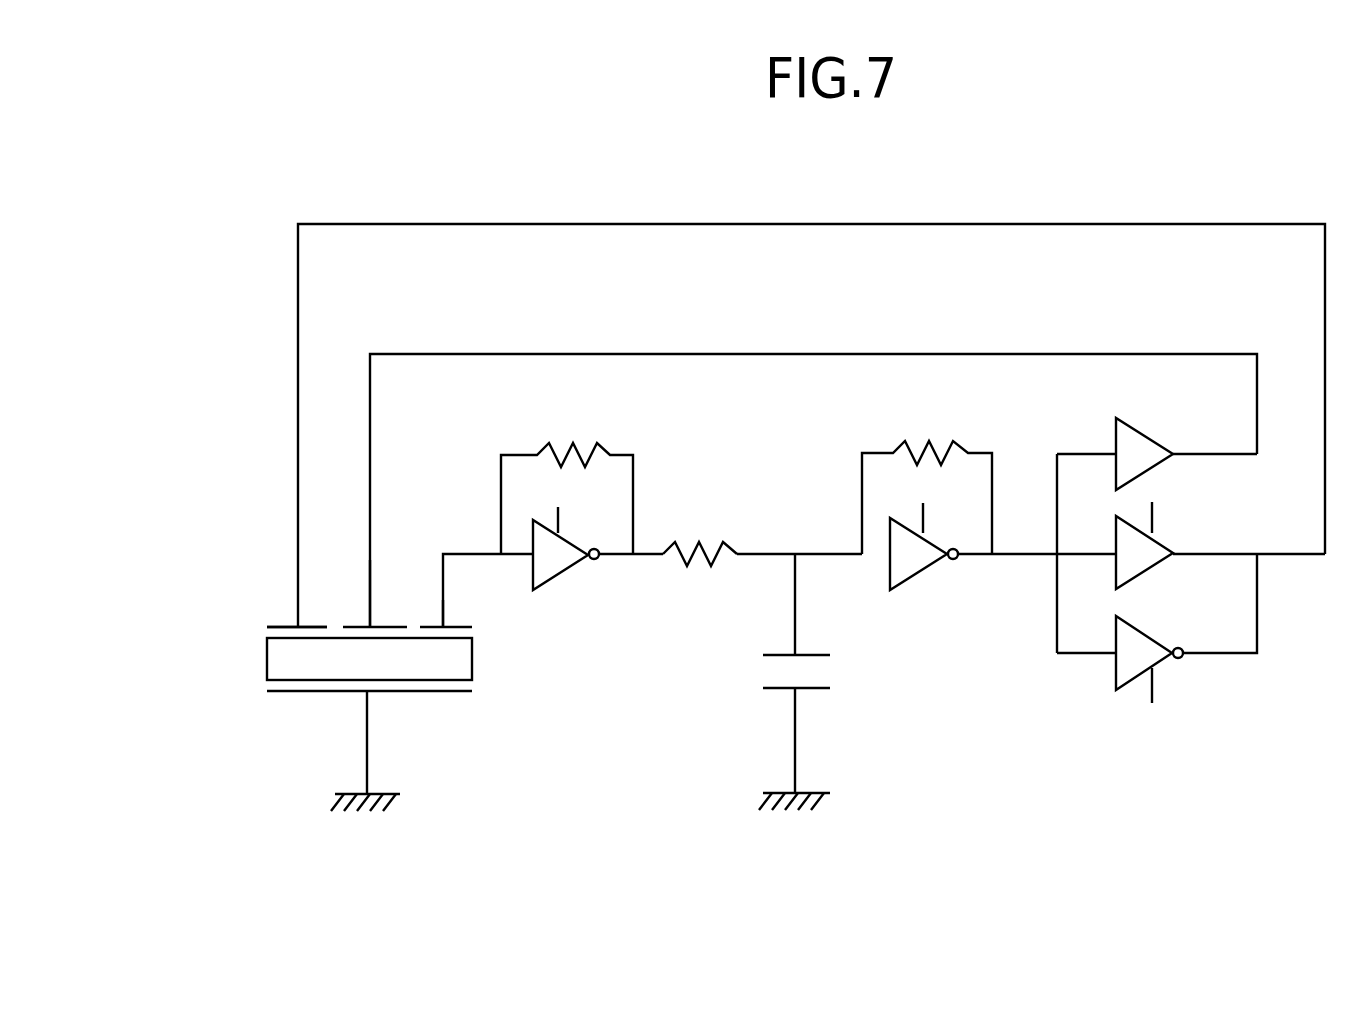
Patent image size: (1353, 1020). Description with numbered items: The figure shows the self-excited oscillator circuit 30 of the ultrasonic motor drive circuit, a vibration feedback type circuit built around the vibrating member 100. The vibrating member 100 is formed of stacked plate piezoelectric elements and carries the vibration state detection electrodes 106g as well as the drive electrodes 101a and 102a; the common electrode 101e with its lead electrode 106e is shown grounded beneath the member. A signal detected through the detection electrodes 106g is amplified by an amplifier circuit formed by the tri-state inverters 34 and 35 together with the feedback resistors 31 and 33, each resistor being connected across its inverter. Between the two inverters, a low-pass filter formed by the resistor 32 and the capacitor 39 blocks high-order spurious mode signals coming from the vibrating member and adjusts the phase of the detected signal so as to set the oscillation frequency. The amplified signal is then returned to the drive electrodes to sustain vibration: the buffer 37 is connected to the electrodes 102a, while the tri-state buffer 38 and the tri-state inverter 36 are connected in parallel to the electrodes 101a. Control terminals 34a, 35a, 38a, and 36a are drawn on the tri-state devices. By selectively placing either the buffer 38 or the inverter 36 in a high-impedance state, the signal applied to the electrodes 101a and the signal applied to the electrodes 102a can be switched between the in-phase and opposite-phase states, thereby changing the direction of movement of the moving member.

The self-excited oscillator circuit 30 is at (1123, 193).
The feedback resistor 31 is at (573, 443).
The resistor 32 is at (682, 563).
The feedback resistor 33 is at (928, 443).
The tri-state inverter 34 is at (567, 570).
The control terminal of inverter 34a is at (587, 510).
The tri-state inverter 35 is at (913, 573).
The control terminal of inverter 35a is at (957, 500).
The tri-state inverter 36 is at (1145, 637).
The control terminal of inverting buffer 36a is at (1152, 680).
The buffer 37 is at (1140, 433).
The tri-state buffer 38 is at (1158, 545).
The control terminal of buffer 38a is at (1152, 508).
The capacitor 39 is at (822, 673).
The vibrating member 100 is at (472, 663).
The drive electrode 101a is at (281, 627).
The electrode 101e is at (435, 693).
The drive electrode 102a is at (383, 627).
The lead electrode 106e is at (365, 751).
The vibration state detection electrode 106g is at (507, 613).